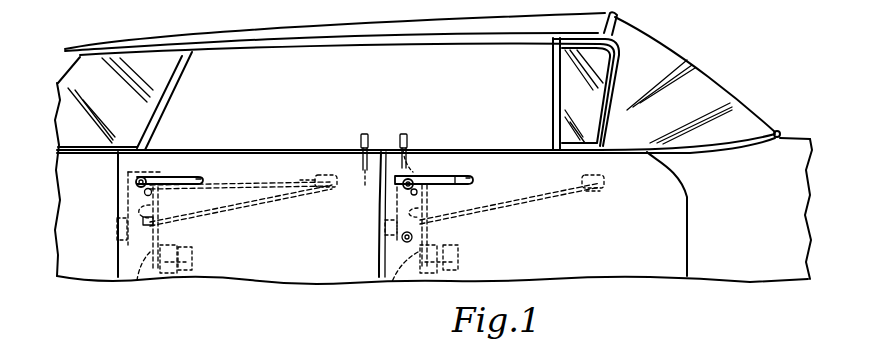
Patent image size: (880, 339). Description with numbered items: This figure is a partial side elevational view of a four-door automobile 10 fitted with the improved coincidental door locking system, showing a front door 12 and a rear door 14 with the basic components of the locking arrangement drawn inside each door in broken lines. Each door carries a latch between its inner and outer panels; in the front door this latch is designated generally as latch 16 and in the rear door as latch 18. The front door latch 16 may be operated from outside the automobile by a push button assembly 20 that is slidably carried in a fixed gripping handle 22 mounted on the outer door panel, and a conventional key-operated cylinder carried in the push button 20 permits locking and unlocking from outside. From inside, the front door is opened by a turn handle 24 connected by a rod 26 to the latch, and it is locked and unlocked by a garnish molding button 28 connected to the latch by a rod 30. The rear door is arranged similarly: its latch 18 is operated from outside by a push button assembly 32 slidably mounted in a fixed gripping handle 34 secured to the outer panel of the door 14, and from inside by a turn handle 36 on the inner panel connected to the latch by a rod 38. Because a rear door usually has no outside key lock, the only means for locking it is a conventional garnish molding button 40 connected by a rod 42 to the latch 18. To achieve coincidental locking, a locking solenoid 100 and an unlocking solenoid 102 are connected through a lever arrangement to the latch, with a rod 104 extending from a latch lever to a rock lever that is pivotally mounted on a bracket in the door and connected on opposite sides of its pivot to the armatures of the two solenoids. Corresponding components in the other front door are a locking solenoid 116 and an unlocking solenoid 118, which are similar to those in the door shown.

The automobile 10 is at (738, 262).
The front door 12 is at (630, 257).
The rear door 14 is at (299, 262).
The front door latch 16 is at (390, 203).
The rear door latch 18 is at (125, 209).
The push button assembly 20 is at (413, 175).
The fixed gripping handle 22 is at (453, 176).
The turn handle 24 is at (590, 176).
The rod 26 is at (518, 205).
The garnish molding button 28 is at (403, 133).
The rod 30 is at (414, 167).
The push button assembly 32 is at (143, 177).
The fixed gripping handle 34 is at (191, 177).
The turn handle 36 is at (320, 172).
The rod 38 is at (220, 208).
The garnish molding button 40 is at (365, 133).
The rod 42 is at (277, 185).
The locking solenoid 100 is at (392, 282).
The unlocking solenoid 102 is at (461, 258).
The rod 104 is at (426, 232).
The locking solenoid 116 is at (137, 280).
The unlocking solenoid 118 is at (194, 258).